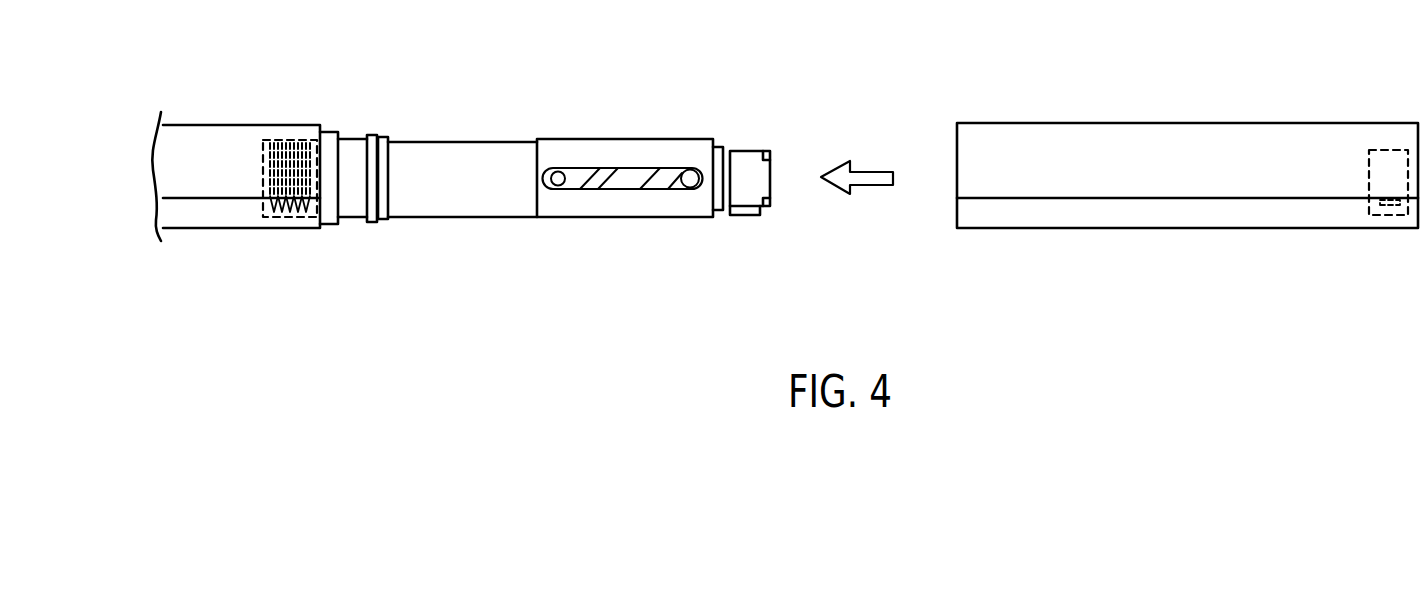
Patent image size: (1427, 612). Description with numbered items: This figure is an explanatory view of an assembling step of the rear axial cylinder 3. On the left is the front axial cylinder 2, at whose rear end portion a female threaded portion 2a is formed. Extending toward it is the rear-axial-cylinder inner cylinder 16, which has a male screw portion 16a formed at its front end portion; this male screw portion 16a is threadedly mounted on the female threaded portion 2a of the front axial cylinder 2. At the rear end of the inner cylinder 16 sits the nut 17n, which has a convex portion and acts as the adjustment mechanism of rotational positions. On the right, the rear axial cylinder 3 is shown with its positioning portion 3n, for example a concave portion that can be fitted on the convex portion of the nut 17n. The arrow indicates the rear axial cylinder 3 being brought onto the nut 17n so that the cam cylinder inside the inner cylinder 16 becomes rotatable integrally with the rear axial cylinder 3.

The front axial cylinder 2 is at (207, 125).
The female threaded portion 2a is at (276, 218).
The rear-axial-cylinder inner cylinder 16 is at (465, 142).
The male screw portion 16a is at (280, 140).
The nut 17n is at (753, 151).
The rear axial cylinder 3 is at (1176, 123).
The positioning portion 3n is at (1378, 216).